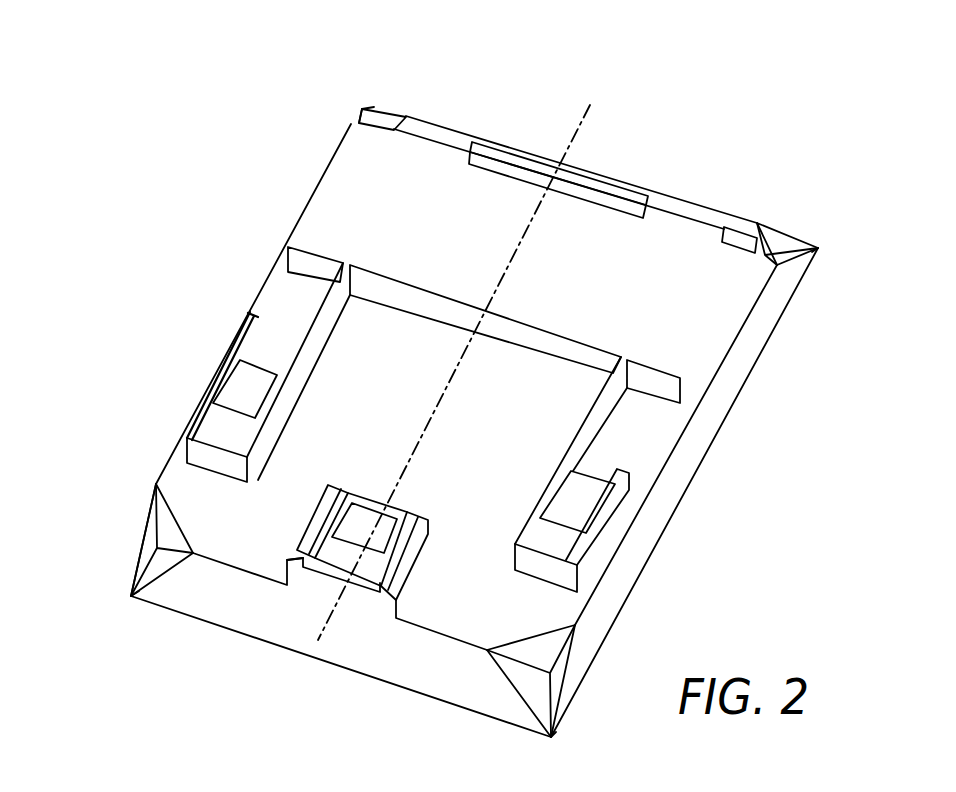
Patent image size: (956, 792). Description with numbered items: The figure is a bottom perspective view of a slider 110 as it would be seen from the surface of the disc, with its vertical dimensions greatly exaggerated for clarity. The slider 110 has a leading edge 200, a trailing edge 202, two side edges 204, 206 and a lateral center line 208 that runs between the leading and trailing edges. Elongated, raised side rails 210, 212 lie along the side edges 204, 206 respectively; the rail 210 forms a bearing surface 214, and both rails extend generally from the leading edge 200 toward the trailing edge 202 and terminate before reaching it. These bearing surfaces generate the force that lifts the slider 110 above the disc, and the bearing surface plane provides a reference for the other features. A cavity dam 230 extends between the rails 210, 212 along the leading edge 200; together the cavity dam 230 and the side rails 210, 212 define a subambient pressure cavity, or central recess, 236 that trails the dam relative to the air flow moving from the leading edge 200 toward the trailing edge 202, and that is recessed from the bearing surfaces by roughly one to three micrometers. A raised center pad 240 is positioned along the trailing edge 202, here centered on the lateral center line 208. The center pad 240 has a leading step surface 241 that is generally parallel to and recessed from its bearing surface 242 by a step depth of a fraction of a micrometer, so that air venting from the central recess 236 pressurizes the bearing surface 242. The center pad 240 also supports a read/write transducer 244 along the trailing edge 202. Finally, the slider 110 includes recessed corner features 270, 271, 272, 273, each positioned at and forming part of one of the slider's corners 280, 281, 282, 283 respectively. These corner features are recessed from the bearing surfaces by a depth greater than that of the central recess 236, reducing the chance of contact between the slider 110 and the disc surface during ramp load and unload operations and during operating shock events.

The slider 110 is at (206, 157).
The leading edge 200 is at (613, 172).
The trailing edge 202 is at (245, 568).
The side edge 204 is at (250, 302).
The side edge 206 is at (690, 400).
The lateral center line 208 is at (598, 112).
The side rail 210 is at (215, 390).
The side rail 212 is at (612, 515).
The bearing surface 214 is at (210, 428).
The cavity dam 230 is at (425, 167).
The subambient pressure cavity 236 is at (486, 423).
The center pad 240 is at (370, 500).
The leading step surface 241 is at (405, 512).
The bearing surface 242 is at (368, 571).
The read/write transducer 244 is at (347, 586).
The recessed corner feature 270 is at (568, 668).
The recessed corner feature 271 is at (806, 240).
The recessed corner feature 272 is at (348, 118).
The recessed corner feature 273 is at (142, 538).
The corner 280 is at (554, 739).
The corner 281 is at (822, 250).
The corner 282 is at (372, 107).
The corner 283 is at (128, 598).